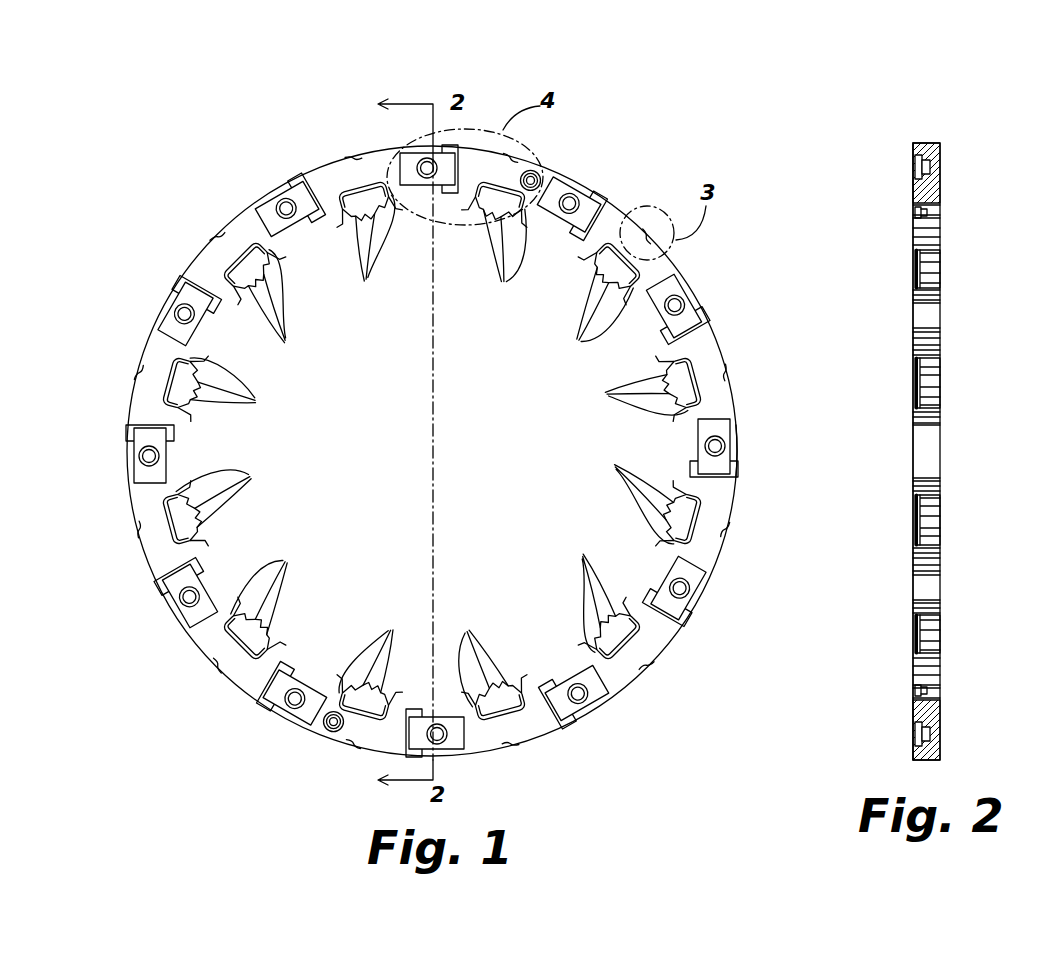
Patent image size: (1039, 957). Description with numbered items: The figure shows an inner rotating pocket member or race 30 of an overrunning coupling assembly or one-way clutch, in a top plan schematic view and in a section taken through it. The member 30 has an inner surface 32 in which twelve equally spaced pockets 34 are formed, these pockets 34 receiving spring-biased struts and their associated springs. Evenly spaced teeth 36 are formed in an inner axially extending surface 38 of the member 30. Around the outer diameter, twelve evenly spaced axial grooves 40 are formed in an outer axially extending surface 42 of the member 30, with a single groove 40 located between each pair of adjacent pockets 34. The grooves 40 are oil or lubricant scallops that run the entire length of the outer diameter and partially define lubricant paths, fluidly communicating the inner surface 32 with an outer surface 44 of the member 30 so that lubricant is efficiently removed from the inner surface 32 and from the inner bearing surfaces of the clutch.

In FIG. 1, the inner rotating pocket member or race 30 is at (765, 197).
In FIG. 2, the inner rotating pocket member or race 30 is at (978, 345).
In FIG. 1, the inner surface 32 is at (712, 340).
In FIG. 2, the inner surface 32 is at (912, 748).
In FIG. 1, the pockets 34 is at (407, 168).
In FIG. 2, the pockets 34 is at (918, 180).
In FIG. 1, the teeth 36 is at (368, 279).
In FIG. 1, the inner axially extending surface 38 is at (742, 455).
In FIG. 2, the inner axially extending surface 38 is at (916, 262).
In FIG. 1, the axial grooves 40 is at (353, 157).
In FIG. 2, the outer axially extending surface 42 is at (936, 150).
In FIG. 2, the outer surface 44 is at (942, 740).